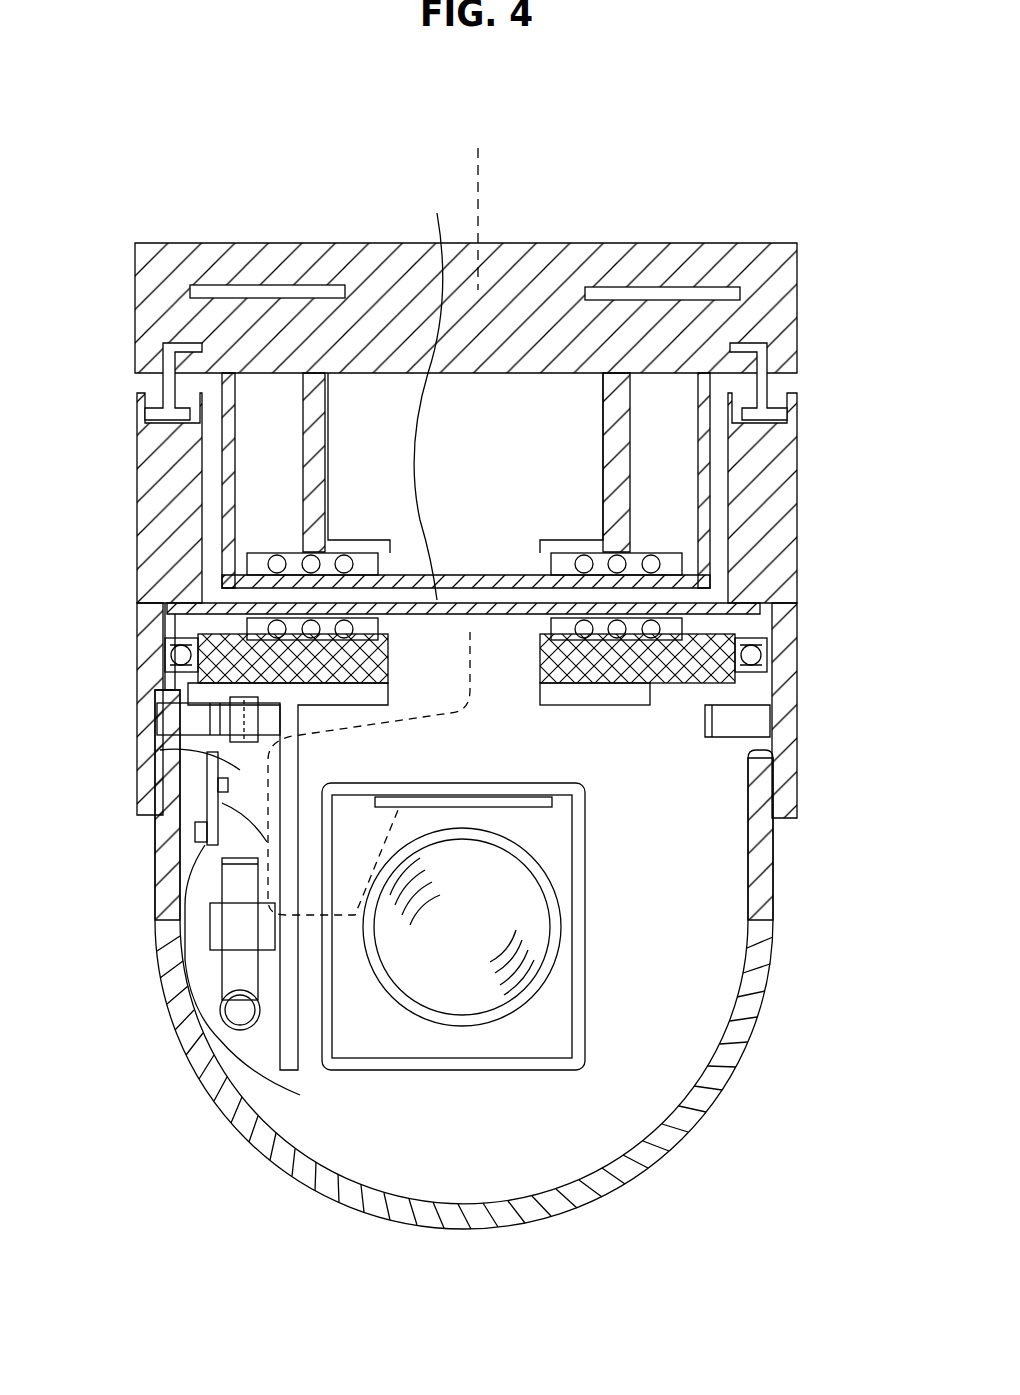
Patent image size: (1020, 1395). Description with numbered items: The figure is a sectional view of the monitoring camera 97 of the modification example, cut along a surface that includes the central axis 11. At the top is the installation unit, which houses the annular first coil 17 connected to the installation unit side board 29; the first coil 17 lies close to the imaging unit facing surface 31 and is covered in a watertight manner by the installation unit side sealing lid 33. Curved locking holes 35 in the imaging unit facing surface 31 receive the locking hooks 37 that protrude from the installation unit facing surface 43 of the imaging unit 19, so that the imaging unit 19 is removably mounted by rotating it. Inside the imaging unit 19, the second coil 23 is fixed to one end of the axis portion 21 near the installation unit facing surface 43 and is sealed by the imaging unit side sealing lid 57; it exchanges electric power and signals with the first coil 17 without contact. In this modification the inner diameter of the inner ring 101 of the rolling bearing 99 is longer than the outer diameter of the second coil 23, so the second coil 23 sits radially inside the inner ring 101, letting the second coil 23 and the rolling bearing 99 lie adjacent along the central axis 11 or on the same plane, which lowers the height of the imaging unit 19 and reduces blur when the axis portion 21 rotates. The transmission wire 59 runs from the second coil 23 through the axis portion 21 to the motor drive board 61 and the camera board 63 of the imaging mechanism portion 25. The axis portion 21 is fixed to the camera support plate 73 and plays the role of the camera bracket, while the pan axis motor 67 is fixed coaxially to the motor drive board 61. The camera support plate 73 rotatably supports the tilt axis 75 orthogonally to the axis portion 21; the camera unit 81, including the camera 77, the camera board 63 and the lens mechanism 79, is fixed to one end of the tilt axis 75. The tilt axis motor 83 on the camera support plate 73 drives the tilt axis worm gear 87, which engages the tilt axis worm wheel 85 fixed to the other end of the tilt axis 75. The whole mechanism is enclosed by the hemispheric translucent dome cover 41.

The central axis 11 is at (478, 178).
The first coil 17 is at (228, 575).
The imaging unit 19 is at (800, 757).
The axis portion 21 is at (700, 685).
The second coil 23 is at (200, 640).
The imaging mechanism portion 25 is at (665, 1040).
The installation unit side board 29 is at (650, 287).
The imaging unit facing surface 31 is at (494, 291).
The installation unit side sealing lid 33 is at (512, 578).
The locking hole 35 is at (163, 345).
The locking hook 37 is at (767, 345).
The dome cover 41 is at (640, 1195).
The installation unit facing surface 43 is at (147, 388).
The imaging unit side sealing lid 57 is at (428, 394).
The transmission wire 59 is at (490, 705).
The motor drive board 61 is at (203, 790).
The camera board 63 is at (528, 815).
The pan axis motor 67 is at (210, 700).
The camera support plate 73 is at (288, 1078).
The tilt axis 75 is at (210, 930).
The camera 77 is at (385, 1070).
The lens mechanism 79 is at (465, 1028).
The camera unit 81 is at (531, 1033).
The tilt axis motor 83 is at (252, 1090).
The tilt axis worm wheel 85 is at (222, 883).
The tilt axis worm gear 87 is at (222, 1012).
The monitoring camera 97 is at (145, 208).
The rolling bearing 99 is at (770, 655).
The inner ring 101 is at (725, 630).